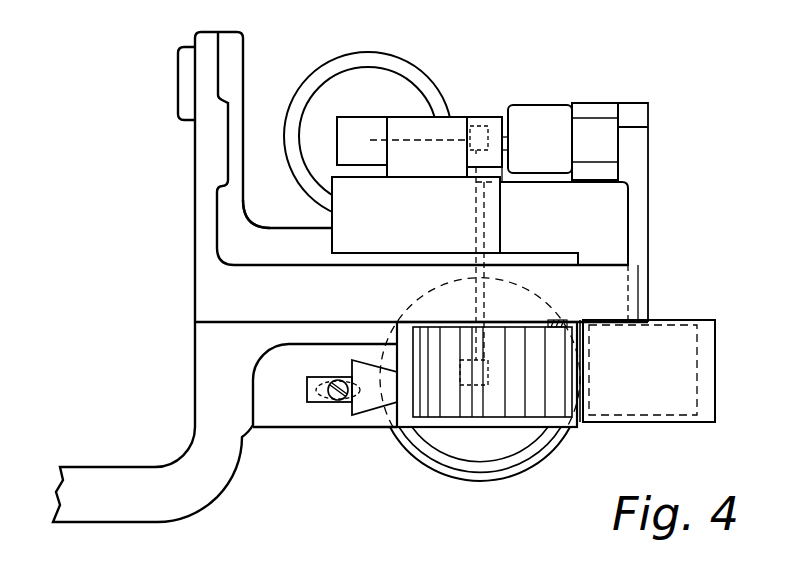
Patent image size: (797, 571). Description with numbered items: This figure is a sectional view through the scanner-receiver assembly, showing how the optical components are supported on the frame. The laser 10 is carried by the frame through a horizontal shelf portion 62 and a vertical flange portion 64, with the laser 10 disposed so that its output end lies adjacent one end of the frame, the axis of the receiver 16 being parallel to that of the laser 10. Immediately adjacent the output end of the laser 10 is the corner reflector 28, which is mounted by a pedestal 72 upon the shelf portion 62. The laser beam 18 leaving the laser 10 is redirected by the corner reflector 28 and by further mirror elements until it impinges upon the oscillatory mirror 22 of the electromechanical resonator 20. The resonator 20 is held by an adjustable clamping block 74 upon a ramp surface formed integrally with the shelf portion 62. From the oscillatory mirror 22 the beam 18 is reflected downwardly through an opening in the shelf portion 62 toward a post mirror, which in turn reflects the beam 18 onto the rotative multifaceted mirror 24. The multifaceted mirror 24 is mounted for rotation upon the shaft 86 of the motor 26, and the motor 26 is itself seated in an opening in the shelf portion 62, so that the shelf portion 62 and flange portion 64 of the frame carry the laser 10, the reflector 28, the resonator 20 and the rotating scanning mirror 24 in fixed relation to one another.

The laser 10 is at (368, 66).
The receiver 16 is at (390, 443).
The laser beam 18 is at (412, 62).
The electromechanical resonator 20 is at (557, 105).
The oscillatory mirror 22 is at (492, 117).
The rotative multifaceted mirror 24 is at (576, 425).
The motor 26 is at (618, 230).
The corner reflector 28 is at (442, 127).
The horizontal shelf portion 62 is at (285, 200).
The vertical flange portion 64 is at (247, 57).
The pedestal 72 is at (327, 228).
The adjustable clamping block 74 is at (605, 110).
The shaft 86 is at (553, 322).